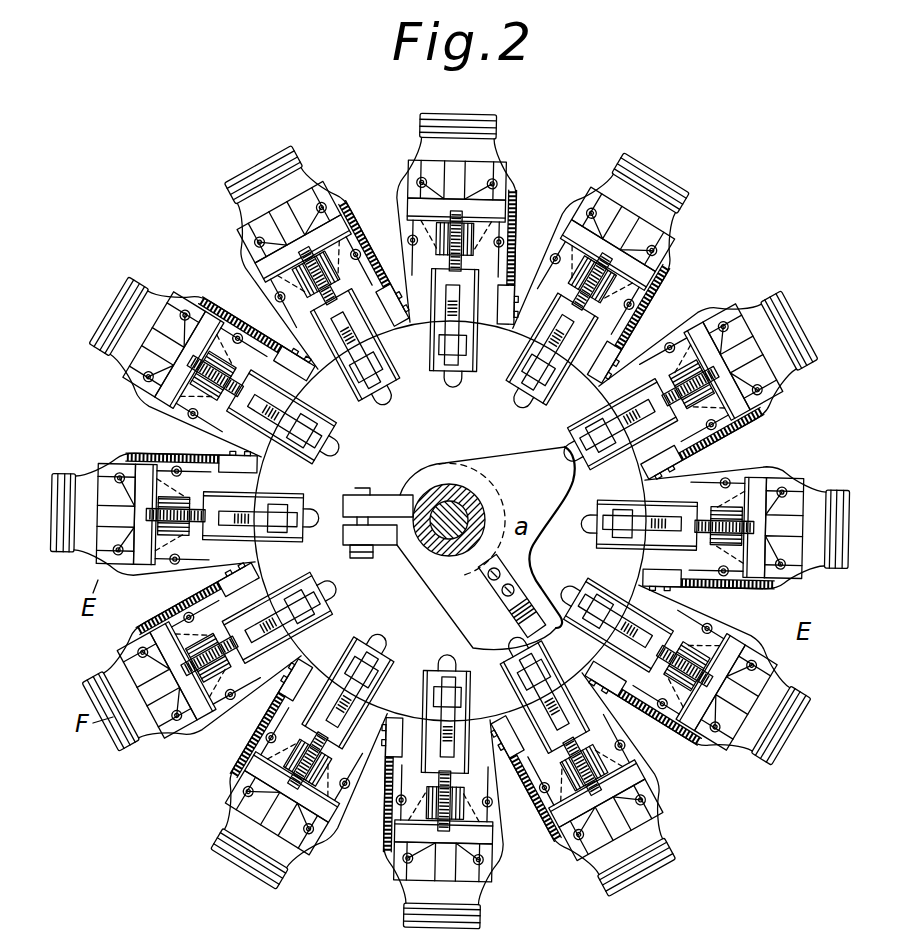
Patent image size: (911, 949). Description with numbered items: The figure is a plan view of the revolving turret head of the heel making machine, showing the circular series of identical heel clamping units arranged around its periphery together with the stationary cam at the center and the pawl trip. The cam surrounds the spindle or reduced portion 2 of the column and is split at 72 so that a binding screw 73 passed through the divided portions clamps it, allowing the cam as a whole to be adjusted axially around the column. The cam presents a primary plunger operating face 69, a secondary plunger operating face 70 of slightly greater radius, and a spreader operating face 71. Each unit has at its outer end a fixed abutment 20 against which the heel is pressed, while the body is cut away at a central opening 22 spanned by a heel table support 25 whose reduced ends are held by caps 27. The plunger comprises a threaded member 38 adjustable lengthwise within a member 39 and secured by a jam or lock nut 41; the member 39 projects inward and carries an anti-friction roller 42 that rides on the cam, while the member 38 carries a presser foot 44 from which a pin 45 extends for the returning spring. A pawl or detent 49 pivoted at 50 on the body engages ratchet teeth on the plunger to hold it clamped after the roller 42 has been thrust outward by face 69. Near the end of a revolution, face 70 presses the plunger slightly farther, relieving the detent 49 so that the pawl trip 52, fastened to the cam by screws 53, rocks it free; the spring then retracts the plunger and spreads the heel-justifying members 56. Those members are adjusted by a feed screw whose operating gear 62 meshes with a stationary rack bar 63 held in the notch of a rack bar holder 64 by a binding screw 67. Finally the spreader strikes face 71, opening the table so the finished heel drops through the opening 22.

The spindle or reduced portion of the column 2 is at (456, 504).
The fixed abutment 20 is at (125, 733).
The central opening 22 is at (420, 786).
The heel table support 25 is at (364, 262).
The caps 27 is at (557, 232).
The threaded plunger member 38 is at (660, 318).
The plunger member 39 is at (590, 537).
The jam or lock nut 41 is at (170, 613).
The anti-friction roller 42 is at (370, 645).
The presser foot 44 is at (488, 834).
The pin 45 is at (193, 737).
The pawl or detent 49 is at (440, 380).
The pivot of the detent 50 is at (350, 372).
The pawl trip 52 is at (527, 609).
The screws 53 is at (497, 589).
The heel-justifying members 56 is at (157, 733).
The operating gear 62 is at (550, 847).
The rack bar 63 is at (685, 728).
The rack bar holder 64 is at (242, 583).
The binding screw 67 is at (290, 336).
The primary plunger operating face 69 is at (527, 456).
The secondary plunger operating face 70 is at (449, 556).
The spreader operating face 71 is at (550, 585).
The split in the cam 72 is at (386, 500).
The binding screw 73 is at (362, 560).